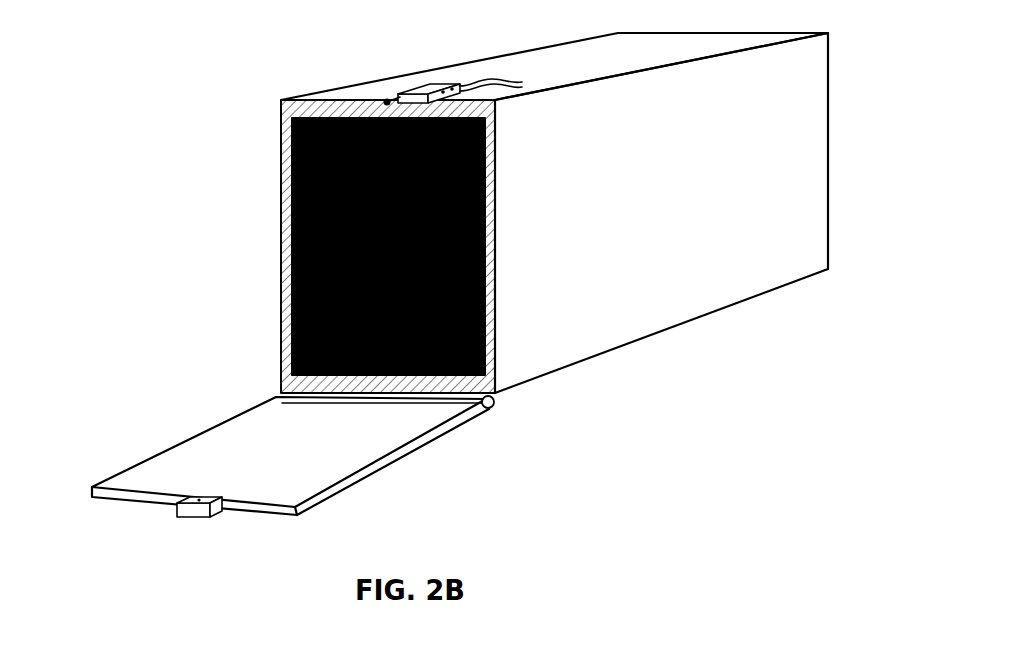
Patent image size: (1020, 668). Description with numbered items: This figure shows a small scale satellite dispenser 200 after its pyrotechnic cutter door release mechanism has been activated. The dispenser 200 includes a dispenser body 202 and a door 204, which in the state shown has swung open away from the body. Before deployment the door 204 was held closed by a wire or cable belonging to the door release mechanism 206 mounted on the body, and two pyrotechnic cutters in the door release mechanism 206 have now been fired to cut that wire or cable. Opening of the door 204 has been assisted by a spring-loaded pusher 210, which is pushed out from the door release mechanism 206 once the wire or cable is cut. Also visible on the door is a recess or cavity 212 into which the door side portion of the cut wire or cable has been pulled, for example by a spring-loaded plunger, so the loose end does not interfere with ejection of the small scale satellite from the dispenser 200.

The satellite dispenser 200 is at (493, 302).
The dispenser body 202 is at (803, 150).
The door 204 is at (206, 433).
The door release mechanism 206 is at (427, 87).
The spring-loaded pusher 210 is at (392, 100).
The recess or cavity 212 is at (193, 518).